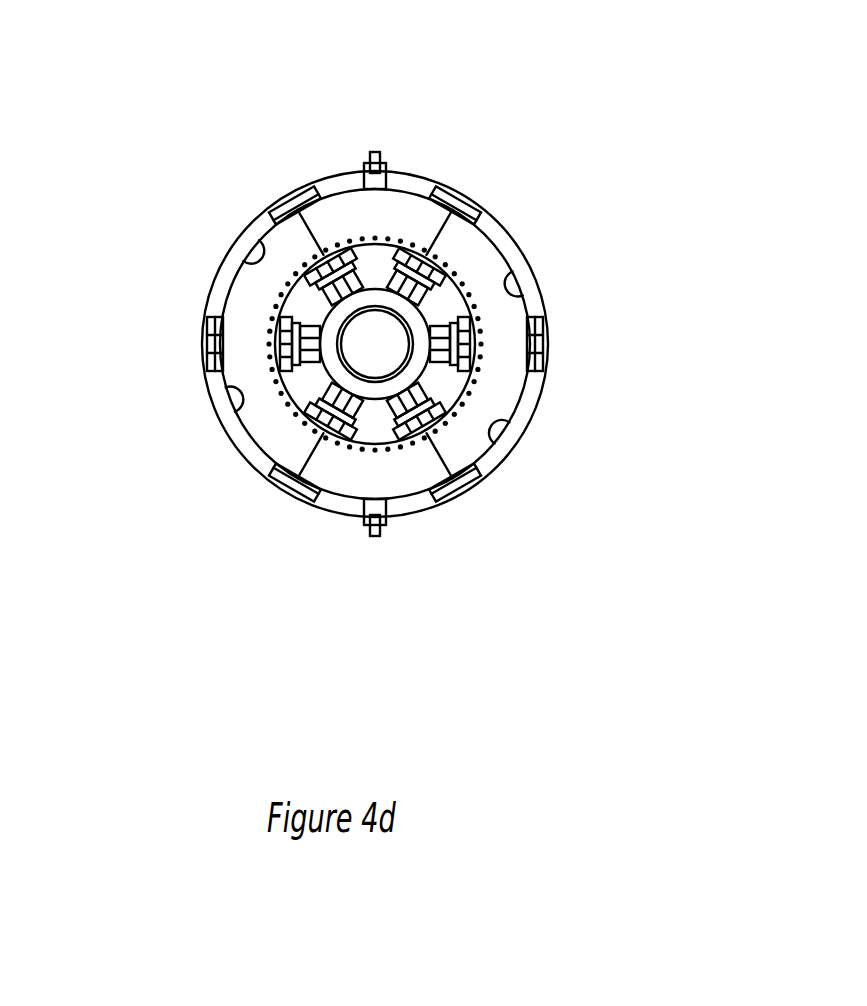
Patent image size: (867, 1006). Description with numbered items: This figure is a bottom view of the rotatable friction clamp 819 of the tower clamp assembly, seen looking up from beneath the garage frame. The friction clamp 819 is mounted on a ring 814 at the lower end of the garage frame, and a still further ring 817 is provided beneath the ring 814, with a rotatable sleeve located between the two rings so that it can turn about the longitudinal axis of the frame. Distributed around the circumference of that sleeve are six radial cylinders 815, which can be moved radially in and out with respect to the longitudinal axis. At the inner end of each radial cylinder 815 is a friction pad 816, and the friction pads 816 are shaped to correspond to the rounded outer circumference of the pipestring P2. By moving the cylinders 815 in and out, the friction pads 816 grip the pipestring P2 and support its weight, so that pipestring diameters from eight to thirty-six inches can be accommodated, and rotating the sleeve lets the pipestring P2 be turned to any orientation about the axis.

The rotatable friction clamp 819 is at (172, 212).
The ring 814 is at (528, 398).
The radial cylinders 815 is at (545, 312).
The friction pads 816 is at (308, 360).
The still further ring 817 is at (408, 472).
The pipestring P2 is at (378, 297).